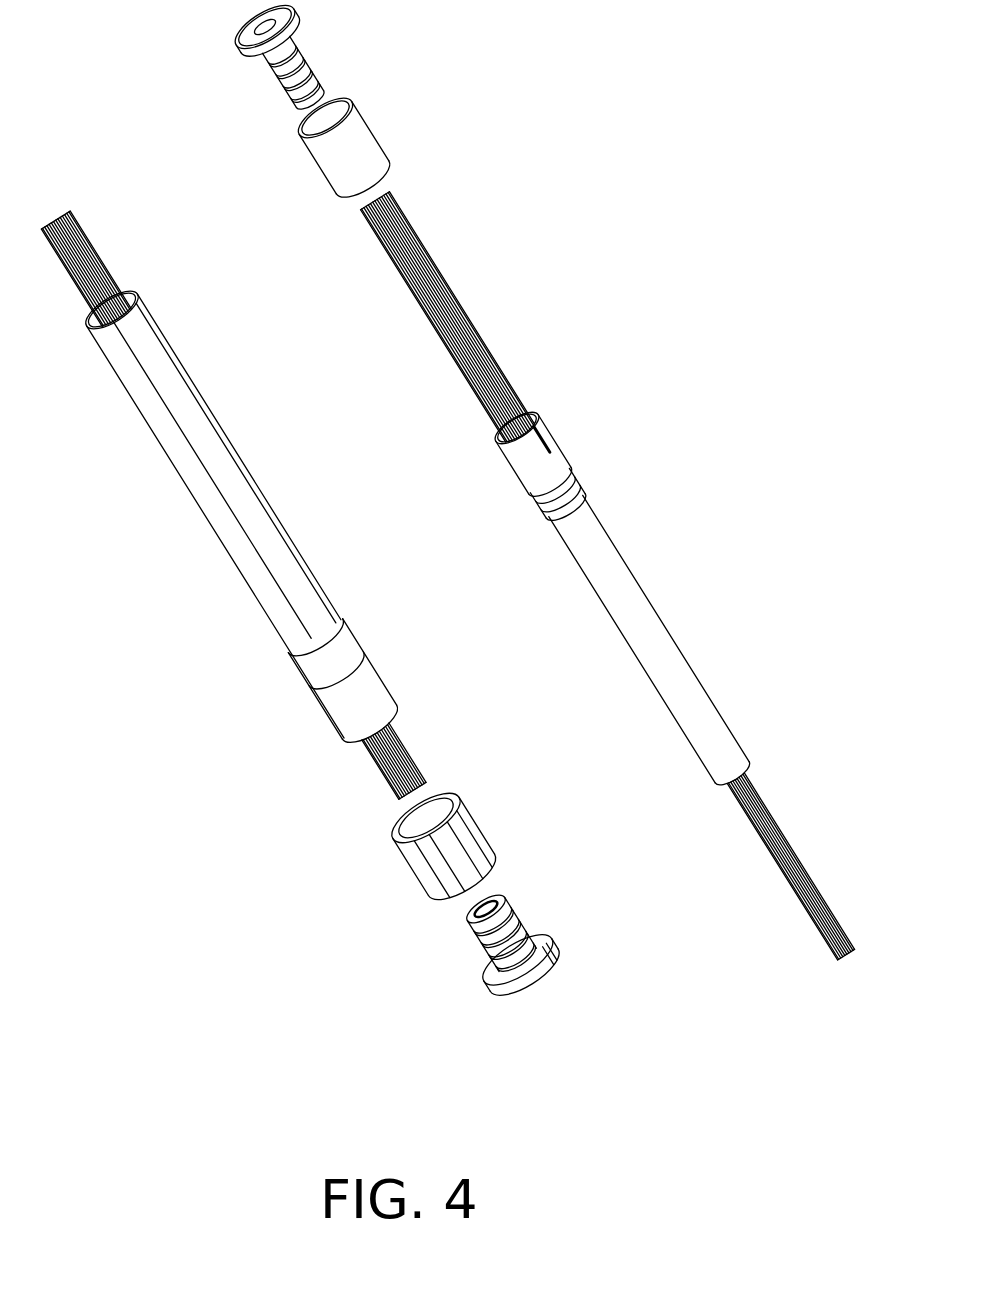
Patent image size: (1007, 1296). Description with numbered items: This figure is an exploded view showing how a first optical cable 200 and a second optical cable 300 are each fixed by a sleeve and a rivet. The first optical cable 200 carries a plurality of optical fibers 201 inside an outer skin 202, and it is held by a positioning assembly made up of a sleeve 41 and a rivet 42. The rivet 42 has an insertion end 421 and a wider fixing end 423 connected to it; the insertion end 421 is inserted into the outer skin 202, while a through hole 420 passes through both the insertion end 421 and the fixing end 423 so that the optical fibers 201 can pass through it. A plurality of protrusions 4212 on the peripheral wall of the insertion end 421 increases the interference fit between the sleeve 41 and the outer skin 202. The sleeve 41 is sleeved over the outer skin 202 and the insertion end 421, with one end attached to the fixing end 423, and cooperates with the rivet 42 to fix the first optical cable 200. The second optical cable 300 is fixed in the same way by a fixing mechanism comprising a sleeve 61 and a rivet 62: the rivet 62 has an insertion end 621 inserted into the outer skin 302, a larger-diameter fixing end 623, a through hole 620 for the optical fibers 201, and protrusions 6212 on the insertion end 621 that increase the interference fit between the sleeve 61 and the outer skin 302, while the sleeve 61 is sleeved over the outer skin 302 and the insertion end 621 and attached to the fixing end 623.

The first optical cable 200 is at (220, 535).
The optical fibers 201 is at (382, 748).
The outer skin 202 is at (278, 612).
The second optical cable 300 is at (649, 553).
The outer skin 302 is at (597, 544).
The sleeve 41 is at (412, 867).
The rivet 42 is at (492, 935).
The through hole 420 is at (472, 916).
The insertion end 421 is at (508, 947).
The protrusions 4212 is at (512, 910).
The fixing end 423 is at (503, 998).
The sleeve 61 is at (363, 143).
The rivet 62 is at (289, 98).
The through hole 620 is at (262, 30).
The insertion end 621 is at (298, 62).
The protrusions 6212 is at (287, 95).
The fixing end 623 is at (300, 27).